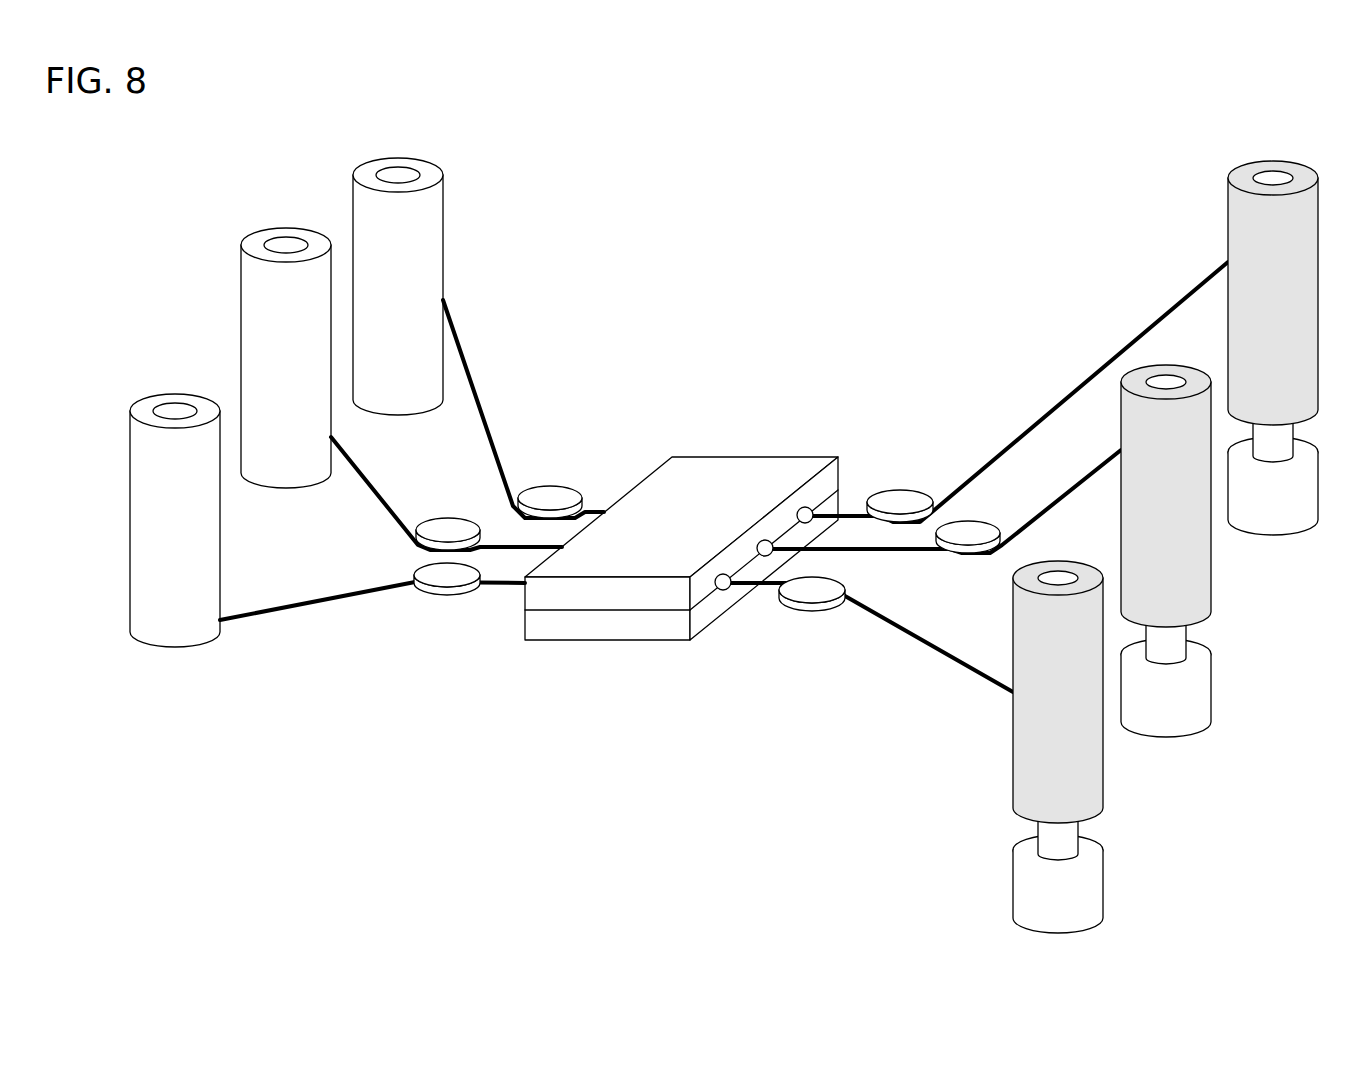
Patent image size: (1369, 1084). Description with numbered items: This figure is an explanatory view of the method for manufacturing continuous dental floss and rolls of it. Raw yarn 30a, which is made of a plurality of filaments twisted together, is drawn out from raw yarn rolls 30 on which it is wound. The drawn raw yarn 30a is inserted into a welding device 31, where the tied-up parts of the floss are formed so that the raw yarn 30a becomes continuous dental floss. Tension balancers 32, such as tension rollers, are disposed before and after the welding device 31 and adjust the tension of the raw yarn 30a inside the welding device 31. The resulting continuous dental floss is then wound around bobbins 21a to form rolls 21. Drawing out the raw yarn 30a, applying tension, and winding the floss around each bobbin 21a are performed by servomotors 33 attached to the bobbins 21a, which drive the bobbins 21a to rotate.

The raw yarn roll 30 is at (327, 175).
The raw yarn 30a is at (493, 385).
The welding device 31 is at (768, 428).
The tension balancer 32 is at (545, 497).
The roll 21 is at (1307, 304).
The bobbin 21a is at (1272, 178).
The servomotor 33 is at (1307, 490).